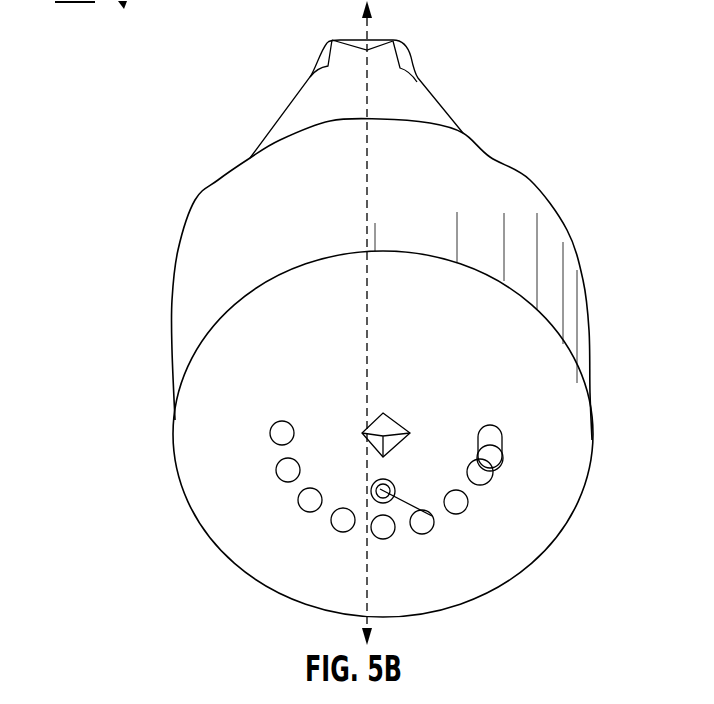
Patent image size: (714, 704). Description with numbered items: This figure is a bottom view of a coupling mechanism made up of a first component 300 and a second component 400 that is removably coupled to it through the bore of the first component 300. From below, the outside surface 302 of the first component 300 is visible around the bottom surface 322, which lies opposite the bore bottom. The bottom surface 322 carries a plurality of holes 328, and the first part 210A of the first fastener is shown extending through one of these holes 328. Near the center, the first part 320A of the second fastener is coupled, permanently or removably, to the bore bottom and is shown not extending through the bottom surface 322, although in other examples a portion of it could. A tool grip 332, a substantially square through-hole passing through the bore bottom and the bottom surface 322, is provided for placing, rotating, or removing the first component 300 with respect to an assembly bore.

The first component 300 is at (359, 205).
The outside surface 302 is at (183, 320).
The second component 400 is at (360, 116).
The bottom surface 322 is at (360, 372).
The plurality of holes 328 is at (298, 504).
The first part of the second fastener 320A is at (433, 522).
The tool grip 332 is at (400, 432).
The first part of the first fastener 210A is at (490, 462).